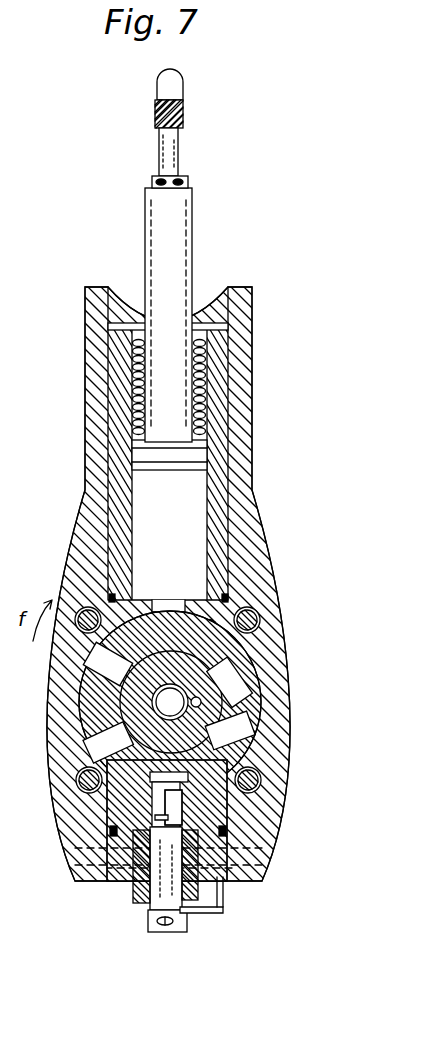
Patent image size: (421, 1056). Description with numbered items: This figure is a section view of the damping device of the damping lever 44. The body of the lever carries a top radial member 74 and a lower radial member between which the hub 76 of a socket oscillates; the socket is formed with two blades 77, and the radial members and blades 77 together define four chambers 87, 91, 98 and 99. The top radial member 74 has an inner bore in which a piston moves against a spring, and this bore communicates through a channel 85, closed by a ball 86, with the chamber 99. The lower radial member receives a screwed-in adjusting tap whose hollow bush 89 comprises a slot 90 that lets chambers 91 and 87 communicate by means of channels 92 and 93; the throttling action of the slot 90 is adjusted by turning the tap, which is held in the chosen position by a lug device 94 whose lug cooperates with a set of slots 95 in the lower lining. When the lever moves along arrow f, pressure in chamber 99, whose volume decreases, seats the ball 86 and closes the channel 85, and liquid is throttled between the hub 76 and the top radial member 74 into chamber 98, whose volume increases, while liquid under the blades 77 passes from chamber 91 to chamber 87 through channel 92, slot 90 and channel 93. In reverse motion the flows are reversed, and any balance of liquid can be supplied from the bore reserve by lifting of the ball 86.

The damping lever 44 is at (298, 407).
The top radial member 74 is at (232, 380).
The channel 85 is at (192, 625).
The ball 86 is at (212, 622).
The blades 77 is at (255, 745).
The hub 76 is at (207, 681).
The chamber 98 is at (107, 653).
The chamber 99 is at (250, 740).
The chamber 91 is at (105, 745).
The channel 92 is at (103, 817).
The chamber 87 is at (236, 790).
The channel 93 is at (226, 836).
The hollow bush 89 is at (232, 868).
The slot 90 is at (162, 812).
The lug device 94 is at (226, 910).
The slots 95 is at (226, 880).